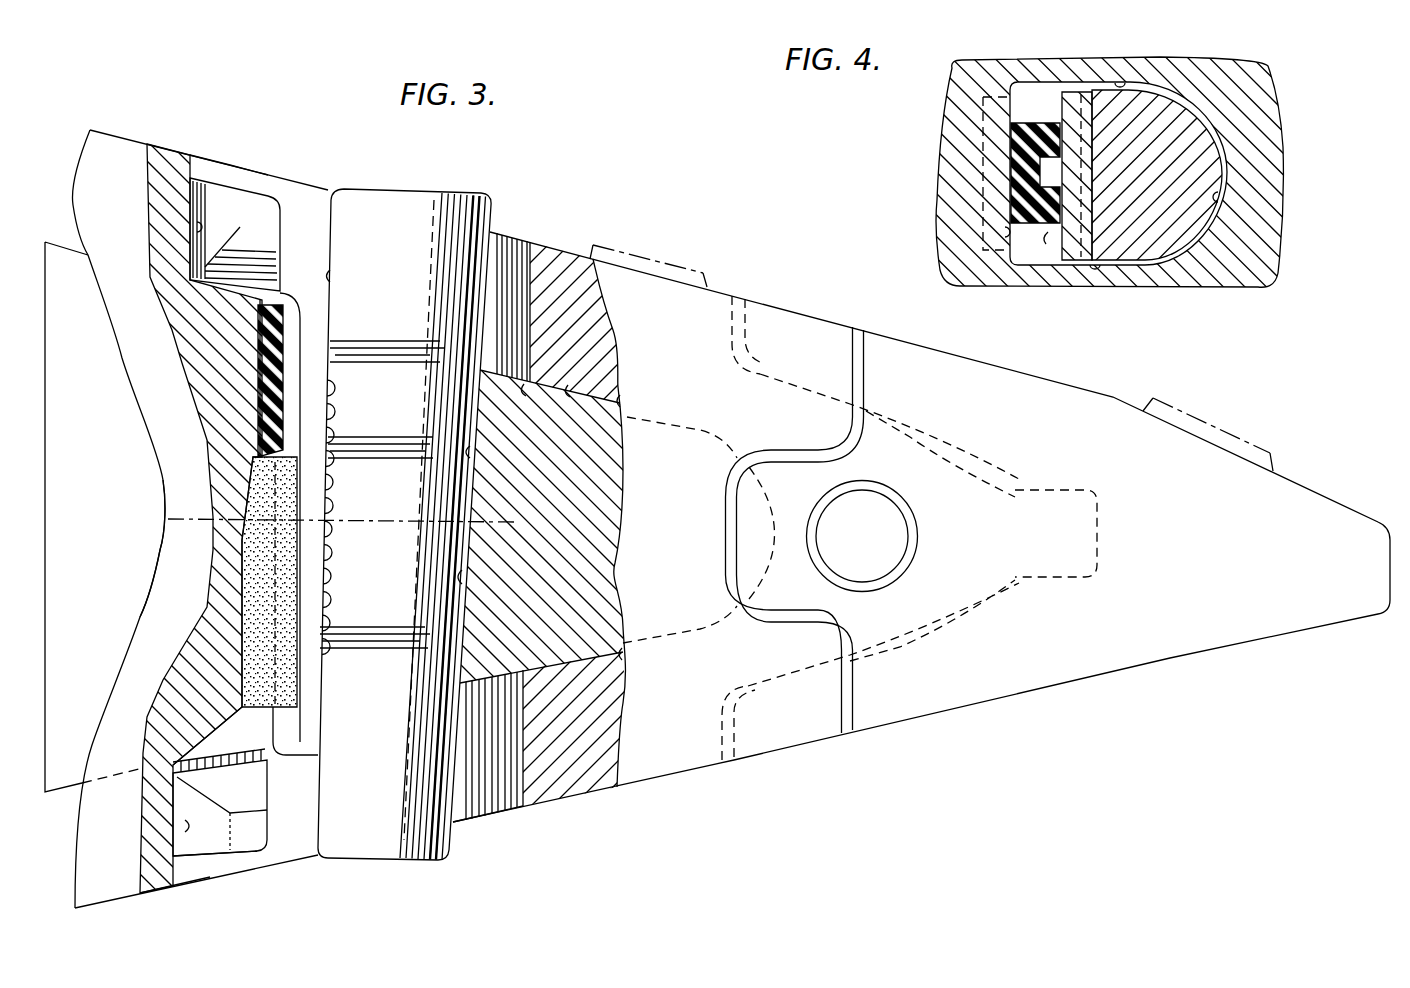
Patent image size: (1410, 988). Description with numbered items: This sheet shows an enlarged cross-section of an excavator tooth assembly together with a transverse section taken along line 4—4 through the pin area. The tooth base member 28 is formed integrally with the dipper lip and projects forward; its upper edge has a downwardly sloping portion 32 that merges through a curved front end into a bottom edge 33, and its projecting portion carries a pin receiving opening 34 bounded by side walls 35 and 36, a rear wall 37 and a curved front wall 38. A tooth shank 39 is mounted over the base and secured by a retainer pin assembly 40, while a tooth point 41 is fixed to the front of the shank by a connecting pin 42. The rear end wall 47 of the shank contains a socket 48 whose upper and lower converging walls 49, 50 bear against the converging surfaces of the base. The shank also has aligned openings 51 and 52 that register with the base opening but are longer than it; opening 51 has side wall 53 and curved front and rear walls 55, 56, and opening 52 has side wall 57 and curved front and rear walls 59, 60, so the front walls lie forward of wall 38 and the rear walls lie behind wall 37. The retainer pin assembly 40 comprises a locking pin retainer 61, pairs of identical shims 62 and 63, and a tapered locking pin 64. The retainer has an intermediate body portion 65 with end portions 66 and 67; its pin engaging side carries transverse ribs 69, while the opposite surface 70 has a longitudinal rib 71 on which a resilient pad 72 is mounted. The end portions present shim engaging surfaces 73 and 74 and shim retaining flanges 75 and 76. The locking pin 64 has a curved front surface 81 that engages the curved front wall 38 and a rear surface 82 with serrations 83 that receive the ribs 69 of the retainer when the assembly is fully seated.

In FIG. 3, the tooth base member 28 is at (115, 482).
In FIG. 4, the tooth base member 28 is at (1262, 140).
In FIG. 3, the downwardly sloping portion 32 is at (600, 397).
In FIG. 3, the bottom edge 33 is at (622, 655).
In FIG. 3, the pin receiving opening 34 is at (462, 577).
In FIG. 4, the side wall 35 is at (1122, 80).
In FIG. 4, the side wall 36 is at (1095, 268).
In FIG. 3, the rear wall 37 is at (258, 360).
In FIG. 4, the rear wall 37 is at (1005, 232).
In FIG. 3, the curved front wall 38 is at (470, 452).
In FIG. 4, the curved front wall 38 is at (1220, 197).
In FIG. 3, the tooth shank 39 is at (827, 286).
In FIG. 3, the retainer pin assembly 40 is at (470, 188).
In FIG. 3, the tooth point 41 is at (1080, 383).
In FIG. 3, the connecting pin 42 is at (893, 543).
In FIG. 3, the rear end wall 47 is at (142, 597).
In FIG. 3, the socket 48 is at (522, 388).
In FIG. 3, the upper converging wall 49 is at (567, 390).
In FIG. 3, the lower converging wall 50 is at (538, 662).
In FIG. 3, the opening 51 is at (515, 242).
In FIG. 3, the aligned opening 52 is at (490, 810).
In FIG. 3, the side wall 53 is at (250, 148).
In FIG. 3, the curved front wall 55 is at (533, 305).
In FIG. 3, the curved rear wall 56 is at (197, 227).
In FIG. 3, the side wall 57 is at (210, 867).
In FIG. 3, the curved front wall 59 is at (515, 752).
In FIG. 3, the curved rear wall 60 is at (183, 828).
In FIG. 3, the locking pin retainer 61 is at (305, 181).
In FIG. 3, the shim 62 is at (238, 222).
In FIG. 3, the shim 63 is at (243, 804).
In FIG. 3, the locking pin 64 is at (408, 312).
In FIG. 4, the locking pin 64 is at (1168, 161).
In FIG. 3, the intermediate body portion 65 is at (328, 383).
In FIG. 3, the end portion 66 is at (313, 252).
In FIG. 3, the end portion 67 is at (300, 810).
In FIG. 3, the ribs 69 is at (333, 500).
In FIG. 4, the opposite surface 70 is at (1046, 247).
In FIG. 4, the longitudinally disposed rib 71 is at (1040, 167).
In FIG. 3, the resilient pad 72 is at (260, 415).
In FIG. 4, the resilient pad 72 is at (1015, 135).
In FIG. 3, the shim engaging surface 73 is at (288, 210).
In FIG. 3, the shim engaging surface 74 is at (268, 783).
In FIG. 3, the shim retaining flange 75 is at (268, 183).
In FIG. 3, the shim retaining flange 76 is at (240, 860).
In FIG. 3, the curved front surface 81 is at (460, 490).
In FIG. 3, the rear surface 82 is at (330, 277).
In FIG. 3, the serrations 83 is at (336, 455).
In FIG. 3, the section line 4- 4 is at (193, 490).